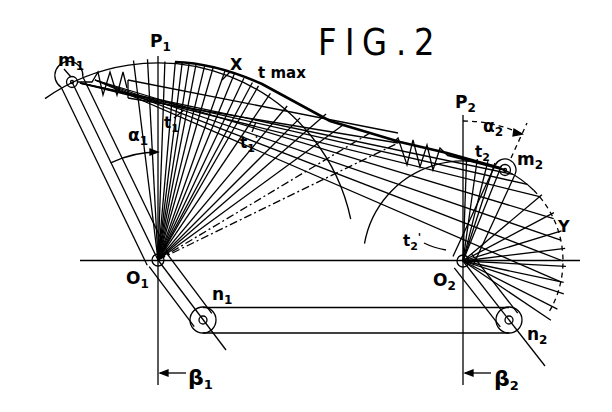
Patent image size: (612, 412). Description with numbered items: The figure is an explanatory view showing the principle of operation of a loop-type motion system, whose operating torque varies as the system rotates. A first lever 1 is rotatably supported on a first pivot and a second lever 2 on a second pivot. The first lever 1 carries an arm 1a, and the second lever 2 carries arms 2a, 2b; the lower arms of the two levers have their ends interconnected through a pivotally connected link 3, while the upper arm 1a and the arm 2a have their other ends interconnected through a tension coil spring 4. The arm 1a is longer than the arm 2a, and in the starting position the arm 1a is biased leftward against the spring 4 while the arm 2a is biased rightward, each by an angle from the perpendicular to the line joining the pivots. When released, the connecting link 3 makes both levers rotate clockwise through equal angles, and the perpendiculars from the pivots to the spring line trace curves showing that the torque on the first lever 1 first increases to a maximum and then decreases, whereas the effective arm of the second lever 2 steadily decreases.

The first lever 1 is at (135, 197).
The arm 1a is at (102, 165).
The second lever 2 is at (503, 246).
The arm 2a is at (524, 192).
The arm 2b is at (520, 301).
The connecting link 3 is at (349, 306).
The tension coil spring 4 is at (415, 147).